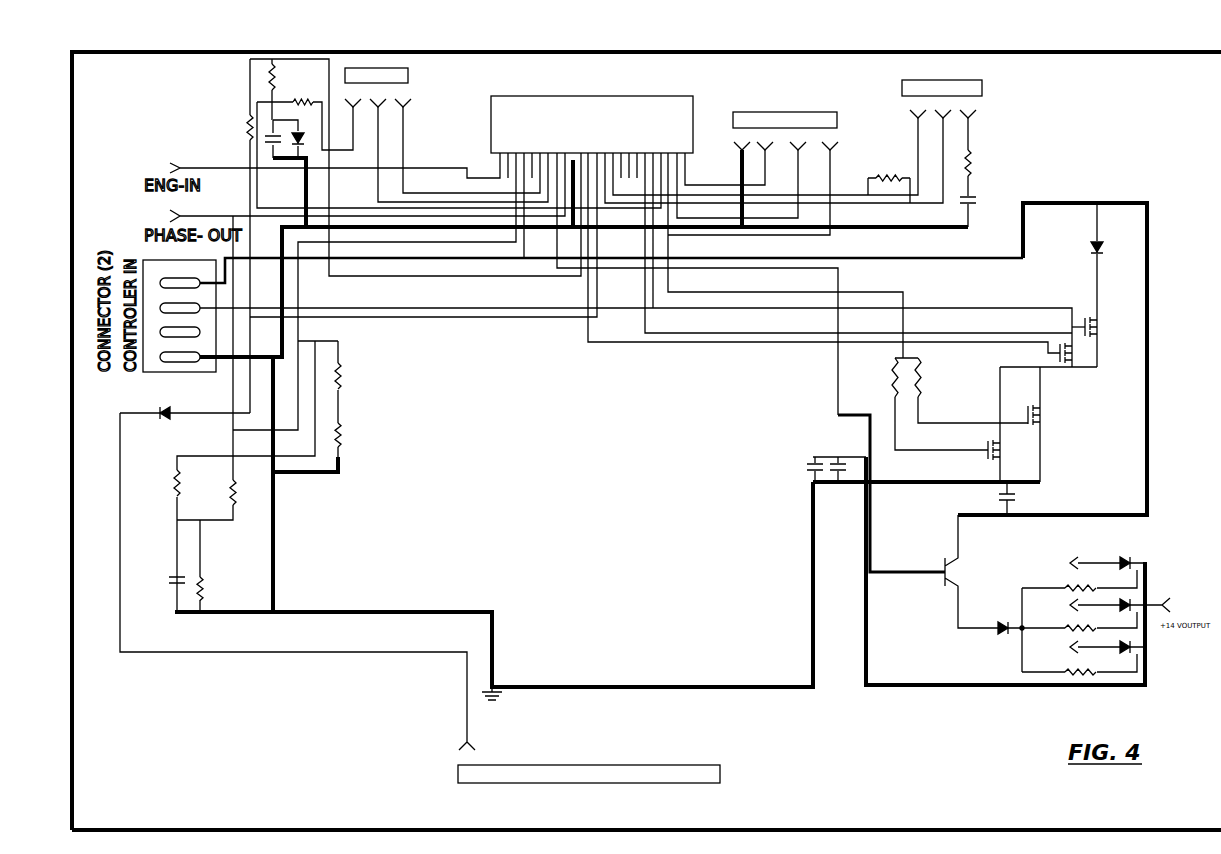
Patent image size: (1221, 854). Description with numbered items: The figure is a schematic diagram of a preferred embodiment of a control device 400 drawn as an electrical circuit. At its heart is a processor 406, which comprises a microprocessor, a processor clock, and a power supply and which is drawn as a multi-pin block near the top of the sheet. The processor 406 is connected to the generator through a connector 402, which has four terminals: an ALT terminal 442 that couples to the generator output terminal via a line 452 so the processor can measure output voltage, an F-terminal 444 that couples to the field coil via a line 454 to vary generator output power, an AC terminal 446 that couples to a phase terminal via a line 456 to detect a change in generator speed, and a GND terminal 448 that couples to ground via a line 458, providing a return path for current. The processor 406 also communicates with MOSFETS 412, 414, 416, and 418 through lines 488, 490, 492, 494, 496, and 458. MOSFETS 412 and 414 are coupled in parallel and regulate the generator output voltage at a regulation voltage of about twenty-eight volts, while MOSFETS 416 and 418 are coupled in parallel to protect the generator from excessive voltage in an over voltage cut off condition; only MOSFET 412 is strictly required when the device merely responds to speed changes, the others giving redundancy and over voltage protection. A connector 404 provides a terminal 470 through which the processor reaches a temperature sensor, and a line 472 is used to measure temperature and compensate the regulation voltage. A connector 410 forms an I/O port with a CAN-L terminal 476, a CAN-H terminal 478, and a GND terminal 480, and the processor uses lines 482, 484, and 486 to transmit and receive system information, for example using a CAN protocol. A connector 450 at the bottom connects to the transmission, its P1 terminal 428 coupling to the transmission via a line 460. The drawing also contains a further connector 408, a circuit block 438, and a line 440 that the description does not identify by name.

The control device 400 is at (198, 50).
The connector 402 is at (143, 260).
The connector 404 is at (408, 80).
The processor 406 is at (488, 128).
The connector RES1 408 is at (757, 110).
The connector 410 is at (982, 80).
The MOSFET 412 is at (1097, 333).
The MOSFET 414 is at (1073, 358).
The MOSFET 416 is at (1040, 423).
The MOSFET 418 is at (1000, 457).
The P1 terminal 428 is at (462, 750).
The field circuit block 438 is at (242, 168).
The phase output line 440 is at (225, 215).
The ALT terminal 442 is at (167, 282).
The F-terminal 444 is at (160, 308).
The AC terminal 446 is at (160, 332).
The GND terminal 448 is at (160, 357).
The connector 450 is at (720, 775).
The line 452 is at (372, 260).
The line 454 is at (208, 307).
The line 456 is at (208, 332).
The line 458 is at (265, 357).
The line 460 is at (222, 653).
The terminal 470 is at (353, 108).
The line 472 is at (337, 152).
The CAN-L terminal 476 is at (910, 114).
The CAN-H terminal 478 is at (968, 120).
The GND terminal 480 is at (968, 113).
The line 482 is at (918, 138).
The line 484 is at (945, 205).
The line 486 is at (968, 127).
The line 488 is at (927, 308).
The line 490 is at (982, 333).
The line 492 is at (862, 342).
The line 494 is at (1000, 383).
The line 496 is at (822, 293).